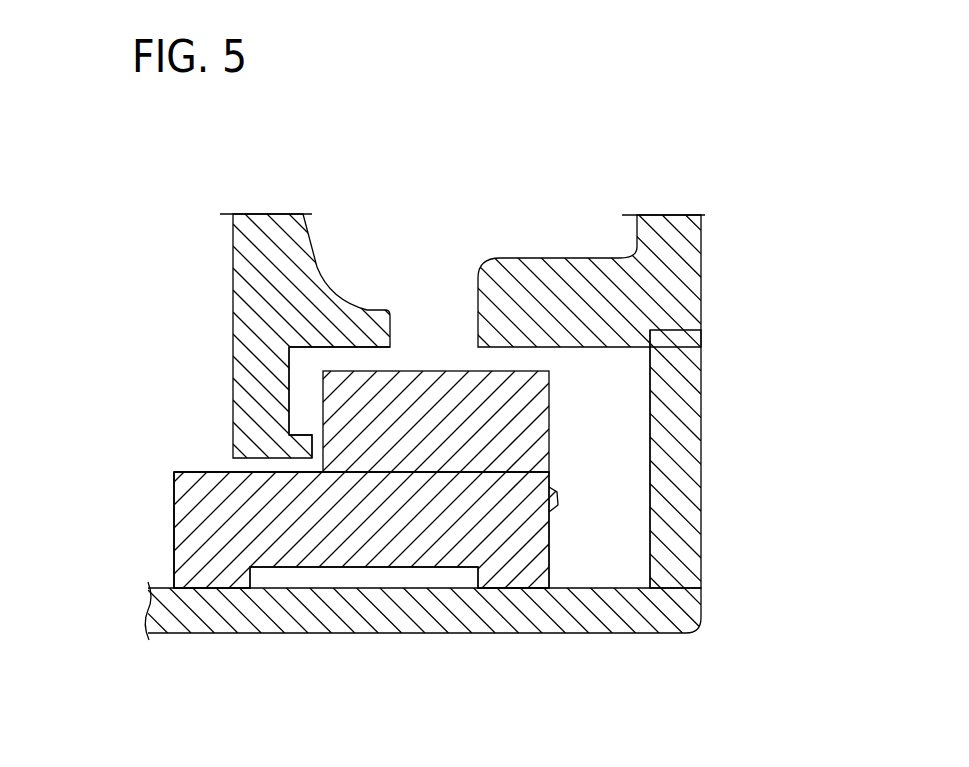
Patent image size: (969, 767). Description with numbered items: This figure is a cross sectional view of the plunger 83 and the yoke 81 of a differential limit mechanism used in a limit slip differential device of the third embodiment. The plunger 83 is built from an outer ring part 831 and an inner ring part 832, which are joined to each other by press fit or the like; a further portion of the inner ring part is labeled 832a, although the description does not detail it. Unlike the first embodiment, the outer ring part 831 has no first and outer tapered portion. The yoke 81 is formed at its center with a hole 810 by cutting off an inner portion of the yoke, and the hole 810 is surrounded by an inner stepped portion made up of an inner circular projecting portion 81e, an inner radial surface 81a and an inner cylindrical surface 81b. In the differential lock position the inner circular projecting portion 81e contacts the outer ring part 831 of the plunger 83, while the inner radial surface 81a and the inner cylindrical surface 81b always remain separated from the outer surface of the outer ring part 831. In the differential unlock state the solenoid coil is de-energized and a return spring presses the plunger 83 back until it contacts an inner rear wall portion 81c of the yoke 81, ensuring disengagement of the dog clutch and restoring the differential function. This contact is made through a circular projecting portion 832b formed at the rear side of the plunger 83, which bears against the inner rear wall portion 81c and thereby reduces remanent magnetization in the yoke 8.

The yoke 8 is at (205, 248).
The yoke 81 is at (710, 271).
The inner radial surface 81a is at (289, 370).
The inner cylindrical surface 81b is at (349, 346).
The inner rear wall portion 81c is at (650, 462).
The inner circular projecting portion 81e is at (302, 432).
The hole 810 is at (232, 466).
The plunger 83 is at (168, 484).
The outer ring part 831 is at (523, 425).
The inner ring part 832 is at (520, 558).
The side face of base plate 832a is at (172, 548).
The circular projecting portion 832b is at (560, 494).